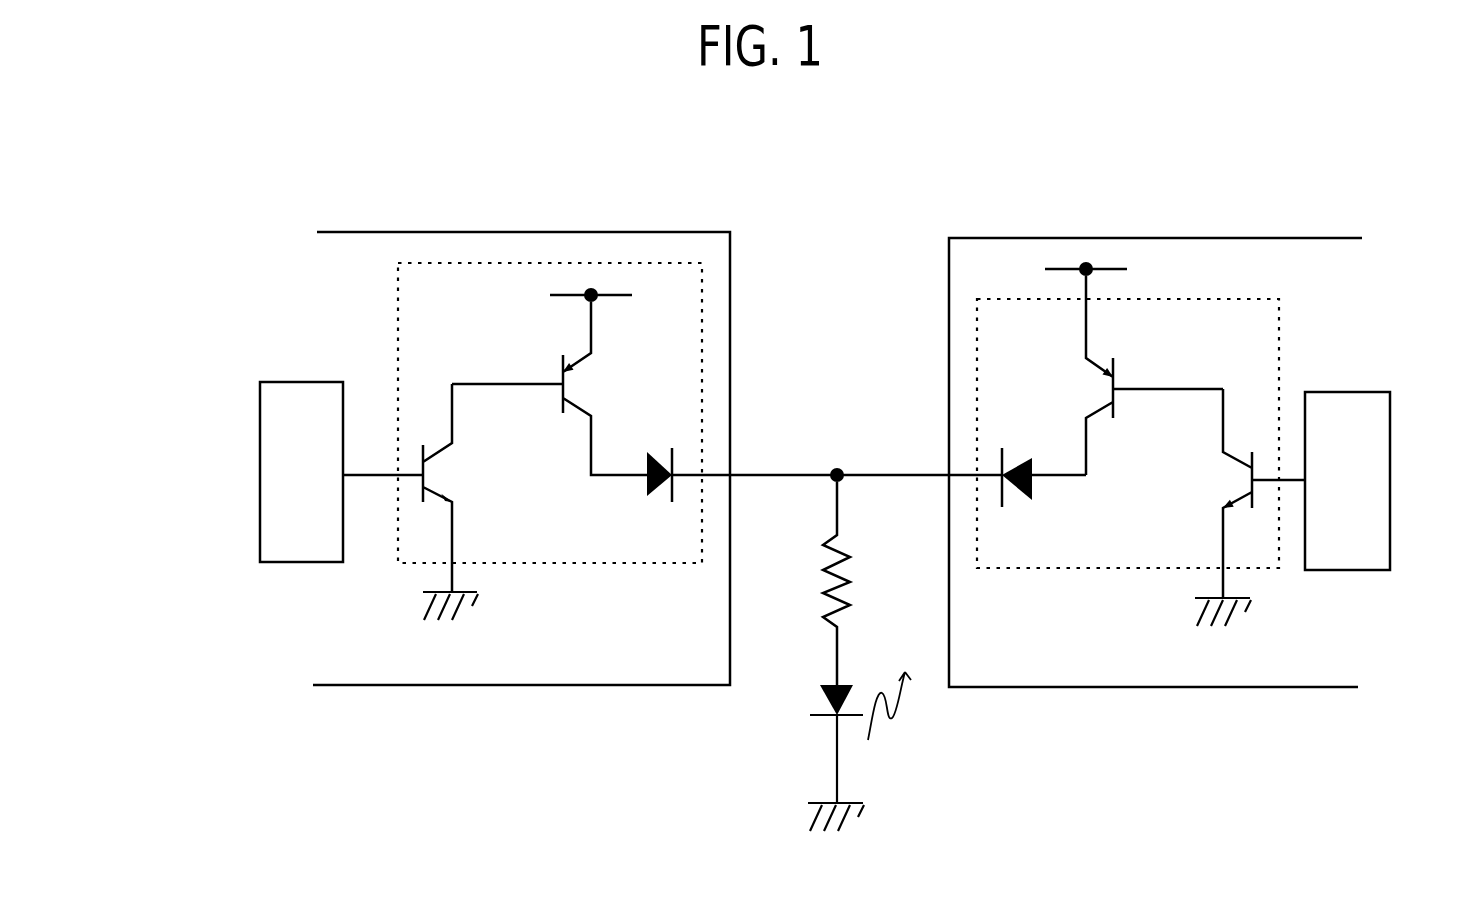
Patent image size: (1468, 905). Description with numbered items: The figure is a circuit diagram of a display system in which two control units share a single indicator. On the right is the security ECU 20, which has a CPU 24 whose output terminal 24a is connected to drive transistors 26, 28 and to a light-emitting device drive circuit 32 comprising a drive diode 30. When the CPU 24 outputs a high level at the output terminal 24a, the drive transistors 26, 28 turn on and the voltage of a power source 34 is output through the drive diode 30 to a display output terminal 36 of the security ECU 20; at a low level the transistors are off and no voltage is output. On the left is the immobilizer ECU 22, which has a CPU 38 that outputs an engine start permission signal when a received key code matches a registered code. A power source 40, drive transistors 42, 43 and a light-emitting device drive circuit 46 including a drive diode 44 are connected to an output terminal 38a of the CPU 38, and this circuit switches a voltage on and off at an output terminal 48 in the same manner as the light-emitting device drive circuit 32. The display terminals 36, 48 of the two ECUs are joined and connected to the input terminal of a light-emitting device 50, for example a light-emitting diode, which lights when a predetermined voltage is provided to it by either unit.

The security ECU 20 is at (1023, 680).
The immobilizer ECU 22 is at (467, 668).
The CPU 24 is at (1352, 558).
The output terminal 24a is at (1302, 470).
The drive transistor 26 is at (1248, 443).
The drive transistor 28 is at (1130, 380).
The drive diode 30 is at (1013, 508).
The light-emitting device drive circuit 32 is at (1275, 323).
The power source 34 is at (1063, 268).
The display output terminal 36 is at (942, 470).
The CPU 38 is at (278, 550).
The output terminal 38a is at (343, 478).
The power source 40 is at (598, 298).
The drive transistor 42 is at (427, 437).
The drive transistor 43 is at (557, 398).
The drive diode 44 is at (655, 505).
The light-emitting device drive circuit 46 is at (528, 265).
The output terminal 48 is at (742, 470).
The light-emitting device 50 is at (810, 727).